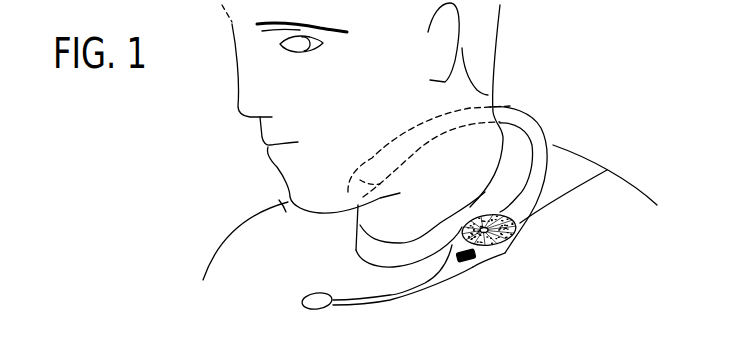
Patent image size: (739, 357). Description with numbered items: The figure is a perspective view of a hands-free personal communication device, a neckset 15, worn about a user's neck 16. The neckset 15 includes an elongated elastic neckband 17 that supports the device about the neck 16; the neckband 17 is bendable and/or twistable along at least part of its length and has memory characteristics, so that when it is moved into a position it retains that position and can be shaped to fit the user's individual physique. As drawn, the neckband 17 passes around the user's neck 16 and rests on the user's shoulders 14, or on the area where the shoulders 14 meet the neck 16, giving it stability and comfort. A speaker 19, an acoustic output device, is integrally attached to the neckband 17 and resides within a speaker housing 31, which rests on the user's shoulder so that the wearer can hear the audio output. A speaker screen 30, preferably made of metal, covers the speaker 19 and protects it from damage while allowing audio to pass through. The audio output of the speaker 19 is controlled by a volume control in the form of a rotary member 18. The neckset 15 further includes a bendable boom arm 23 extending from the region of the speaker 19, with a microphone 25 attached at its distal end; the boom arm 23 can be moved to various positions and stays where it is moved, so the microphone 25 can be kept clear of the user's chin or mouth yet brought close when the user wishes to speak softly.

The shoulders 14 is at (288, 202).
The neckset 15 is at (532, 98).
The neck 16 is at (337, 232).
The elastic neckband 17 is at (538, 135).
The rotary member 18 is at (468, 262).
The speaker 19 is at (535, 275).
The bendable boom arm 23 is at (388, 298).
The microphone 25 is at (313, 310).
The speaker screen 30 is at (523, 227).
The speaker housing 31 is at (527, 237).